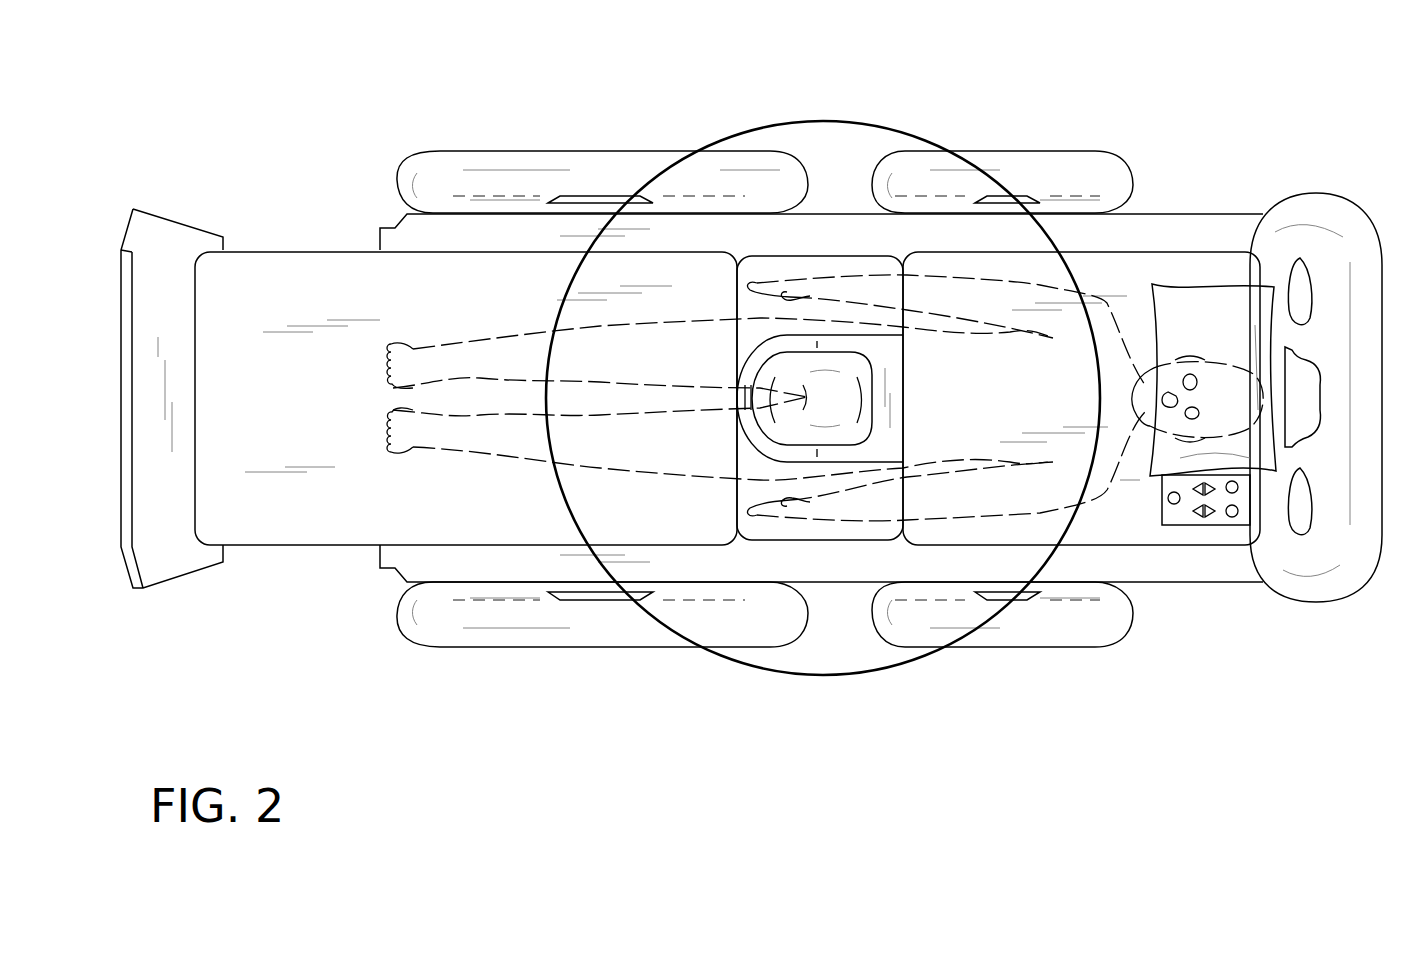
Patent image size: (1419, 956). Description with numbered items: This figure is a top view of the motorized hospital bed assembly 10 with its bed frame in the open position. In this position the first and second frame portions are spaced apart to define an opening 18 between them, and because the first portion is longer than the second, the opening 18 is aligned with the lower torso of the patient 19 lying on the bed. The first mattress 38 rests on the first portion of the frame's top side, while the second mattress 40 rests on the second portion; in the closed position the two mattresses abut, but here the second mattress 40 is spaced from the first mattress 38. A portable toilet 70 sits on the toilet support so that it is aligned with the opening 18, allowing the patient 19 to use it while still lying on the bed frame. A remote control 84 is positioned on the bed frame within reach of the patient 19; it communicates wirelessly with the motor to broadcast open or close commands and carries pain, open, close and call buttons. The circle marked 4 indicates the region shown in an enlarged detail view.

The patient support apparatus (bed) 10 is at (1271, 147).
The seat section 18 is at (741, 260).
The pillow 19 is at (1218, 373).
The frame with side rails 38 is at (1145, 243).
The foot section of mattress 40 is at (286, 252).
The toilet / commode 70 is at (770, 455).
The control panel 84 is at (1220, 525).
The circle indicating detail view of FIG. 4 is at (873, 673).